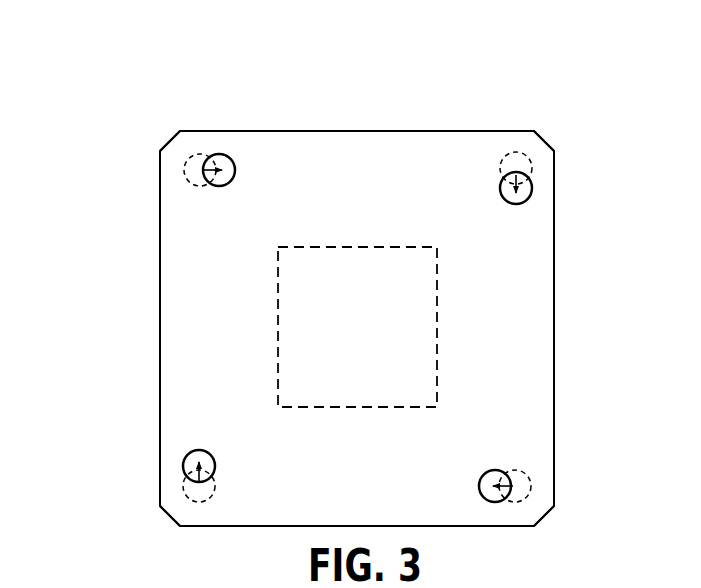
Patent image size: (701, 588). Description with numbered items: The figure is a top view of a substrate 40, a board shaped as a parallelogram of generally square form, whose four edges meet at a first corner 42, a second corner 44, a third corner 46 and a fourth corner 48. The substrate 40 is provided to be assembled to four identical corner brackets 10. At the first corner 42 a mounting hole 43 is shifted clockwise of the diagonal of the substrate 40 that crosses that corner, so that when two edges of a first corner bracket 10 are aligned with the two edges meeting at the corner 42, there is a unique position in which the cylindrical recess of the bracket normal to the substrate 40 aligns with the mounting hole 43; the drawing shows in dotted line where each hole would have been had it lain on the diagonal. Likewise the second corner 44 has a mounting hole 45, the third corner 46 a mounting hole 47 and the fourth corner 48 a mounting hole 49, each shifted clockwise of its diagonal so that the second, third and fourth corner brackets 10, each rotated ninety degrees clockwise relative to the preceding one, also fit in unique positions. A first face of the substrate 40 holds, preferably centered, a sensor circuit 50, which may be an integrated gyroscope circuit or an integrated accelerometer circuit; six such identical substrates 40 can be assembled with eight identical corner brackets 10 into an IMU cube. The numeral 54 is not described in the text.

The substrate 40 is at (318, 108).
The first corner 42 is at (150, 133).
The second corner 44 is at (550, 134).
The third corner 46 is at (558, 520).
The fourth corner 48 is at (145, 518).
The mounting hole 43 is at (219, 154).
The mounting hole 45 is at (533, 198).
The mounting hole 47 is at (500, 470).
The mounting hole 49 is at (185, 458).
The sensor circuit 50 is at (293, 295).
The corner bracket 10 is at (102, 580).
The element 54 is at (649, 584).